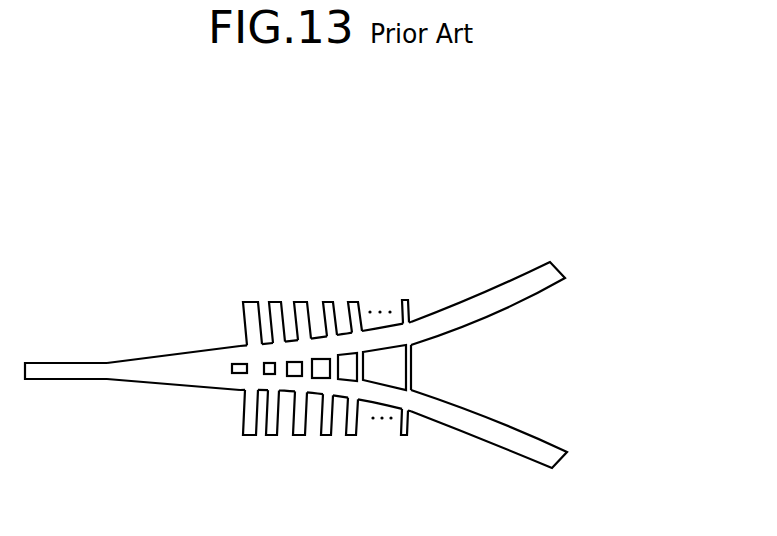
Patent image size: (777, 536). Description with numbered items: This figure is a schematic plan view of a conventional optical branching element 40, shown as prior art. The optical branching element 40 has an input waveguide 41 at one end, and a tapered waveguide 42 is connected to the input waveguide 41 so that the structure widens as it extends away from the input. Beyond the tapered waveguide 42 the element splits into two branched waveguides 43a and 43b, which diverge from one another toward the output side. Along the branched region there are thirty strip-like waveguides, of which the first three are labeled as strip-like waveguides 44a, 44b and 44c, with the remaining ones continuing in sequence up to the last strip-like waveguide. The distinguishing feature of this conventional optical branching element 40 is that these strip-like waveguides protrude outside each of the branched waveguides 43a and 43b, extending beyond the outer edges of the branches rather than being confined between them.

The optical branching element 40 is at (441, 176).
The input waveguide 41 is at (53, 362).
The tapered waveguide 42 is at (178, 348).
The branched waveguide 43a is at (472, 300).
The branched waveguide 43b is at (473, 430).
The strip-like waveguide 44a is at (243, 300).
The strip-like waveguide 44b is at (270, 300).
The strip-like waveguide 44c is at (300, 300).